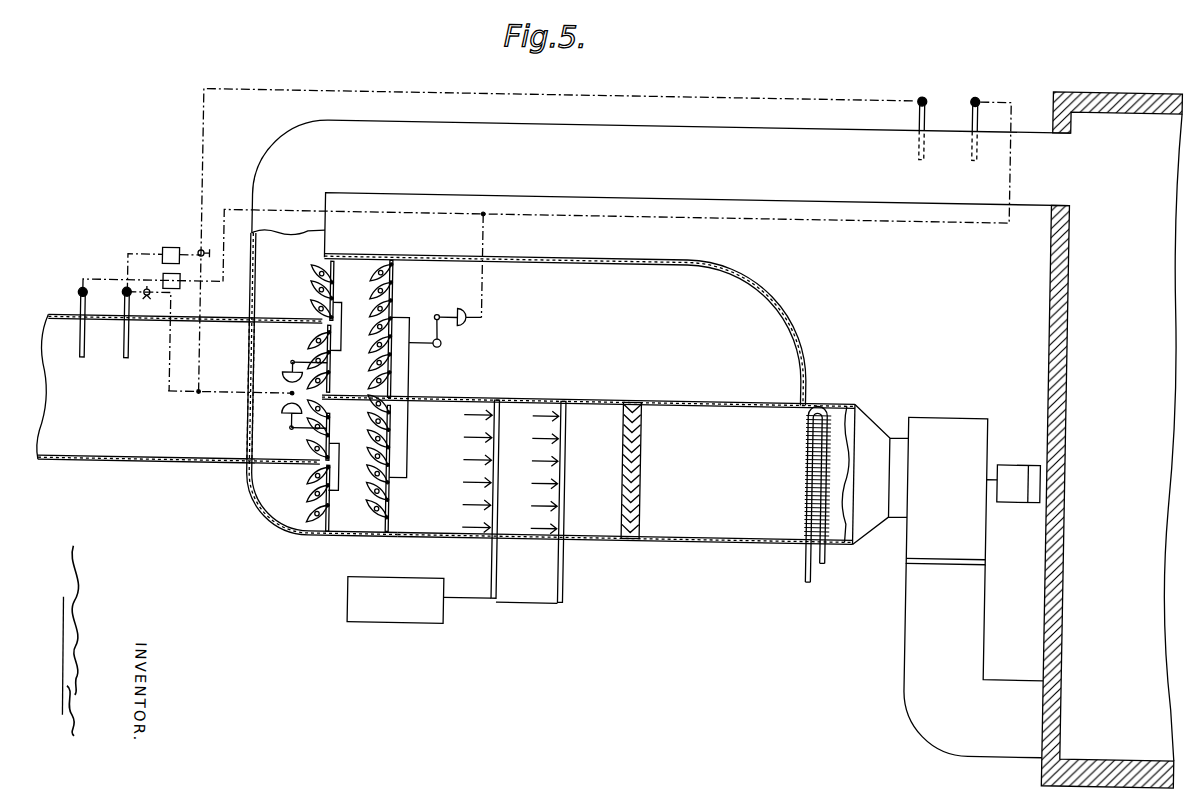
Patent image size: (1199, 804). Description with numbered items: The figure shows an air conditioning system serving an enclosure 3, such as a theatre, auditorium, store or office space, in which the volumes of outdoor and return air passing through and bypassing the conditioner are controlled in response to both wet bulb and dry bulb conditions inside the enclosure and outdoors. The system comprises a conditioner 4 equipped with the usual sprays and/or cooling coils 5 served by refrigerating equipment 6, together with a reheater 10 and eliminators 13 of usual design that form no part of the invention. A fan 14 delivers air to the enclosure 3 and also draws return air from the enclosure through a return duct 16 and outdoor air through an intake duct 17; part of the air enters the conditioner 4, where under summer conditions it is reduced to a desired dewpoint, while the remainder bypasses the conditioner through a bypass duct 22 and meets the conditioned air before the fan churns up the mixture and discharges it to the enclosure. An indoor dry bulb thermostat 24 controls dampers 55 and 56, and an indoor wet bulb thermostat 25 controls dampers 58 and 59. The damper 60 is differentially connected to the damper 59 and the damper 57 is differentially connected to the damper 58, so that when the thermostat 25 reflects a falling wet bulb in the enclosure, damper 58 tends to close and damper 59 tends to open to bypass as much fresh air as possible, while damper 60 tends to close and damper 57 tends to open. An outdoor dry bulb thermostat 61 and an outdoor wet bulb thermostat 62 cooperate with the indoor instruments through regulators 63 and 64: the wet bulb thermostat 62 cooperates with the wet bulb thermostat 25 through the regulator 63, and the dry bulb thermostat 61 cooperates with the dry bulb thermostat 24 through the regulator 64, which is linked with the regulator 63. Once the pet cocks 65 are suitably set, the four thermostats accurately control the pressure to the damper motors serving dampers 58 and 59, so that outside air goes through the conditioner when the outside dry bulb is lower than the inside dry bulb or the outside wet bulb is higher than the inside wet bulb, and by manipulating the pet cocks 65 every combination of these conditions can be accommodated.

The enclosure 3 is at (1105, 378).
The conditioner 4 is at (596, 529).
The sprays and/or cooling coils 5 is at (494, 477).
The refrigerating equipment 6 is at (400, 588).
The reheater 10 is at (808, 462).
The eliminators 13 is at (642, 474).
The fan 14 is at (953, 416).
The return duct 16 is at (610, 126).
The intake duct 17 is at (158, 467).
The bypass duct 22 is at (630, 272).
The dry bulb thermostat 24 is at (974, 114).
The wet bulb thermostat 25 is at (913, 112).
The damper 55 is at (373, 425).
The damper 56 is at (369, 288).
The damper 57 is at (310, 500).
The damper 58 is at (311, 440).
The damper 59 is at (330, 380).
The damper 60 is at (314, 288).
The dry bulb thermostat 61 is at (78, 298).
The wet bulb thermostat 62 is at (121, 301).
The regulator 63 is at (168, 255).
The regulator 64 is at (173, 296).
The pet cocks 65 is at (200, 257).